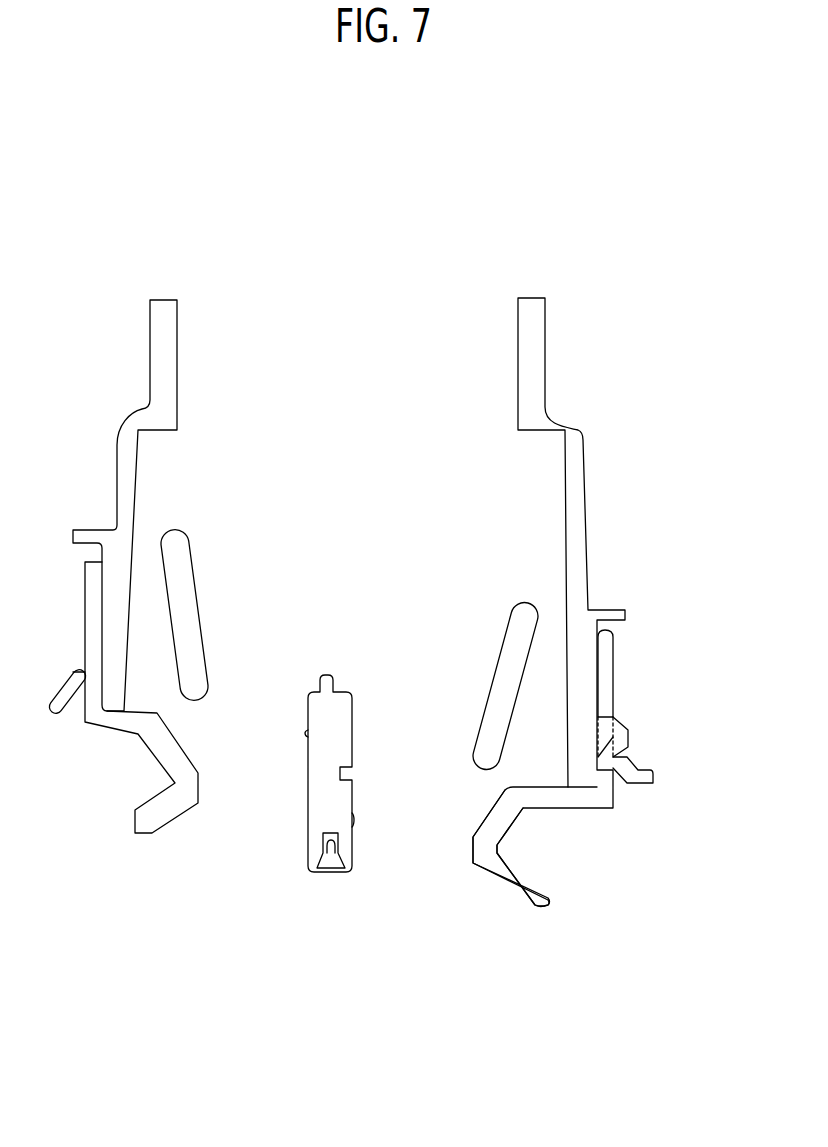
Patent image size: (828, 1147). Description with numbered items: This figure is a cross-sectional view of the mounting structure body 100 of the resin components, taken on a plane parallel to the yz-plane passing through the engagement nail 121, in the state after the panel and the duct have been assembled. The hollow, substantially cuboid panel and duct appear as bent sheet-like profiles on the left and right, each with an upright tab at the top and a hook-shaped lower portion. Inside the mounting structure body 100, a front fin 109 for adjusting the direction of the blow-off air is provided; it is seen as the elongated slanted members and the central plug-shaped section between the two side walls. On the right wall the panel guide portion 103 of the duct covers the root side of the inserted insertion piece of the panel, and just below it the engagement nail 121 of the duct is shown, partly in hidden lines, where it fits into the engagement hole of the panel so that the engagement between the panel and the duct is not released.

The mounting structure body 100 is at (386, 257).
The front fin 109 is at (508, 642).
The panel guide portion 103 is at (628, 728).
The engagement nail 121 is at (600, 743).